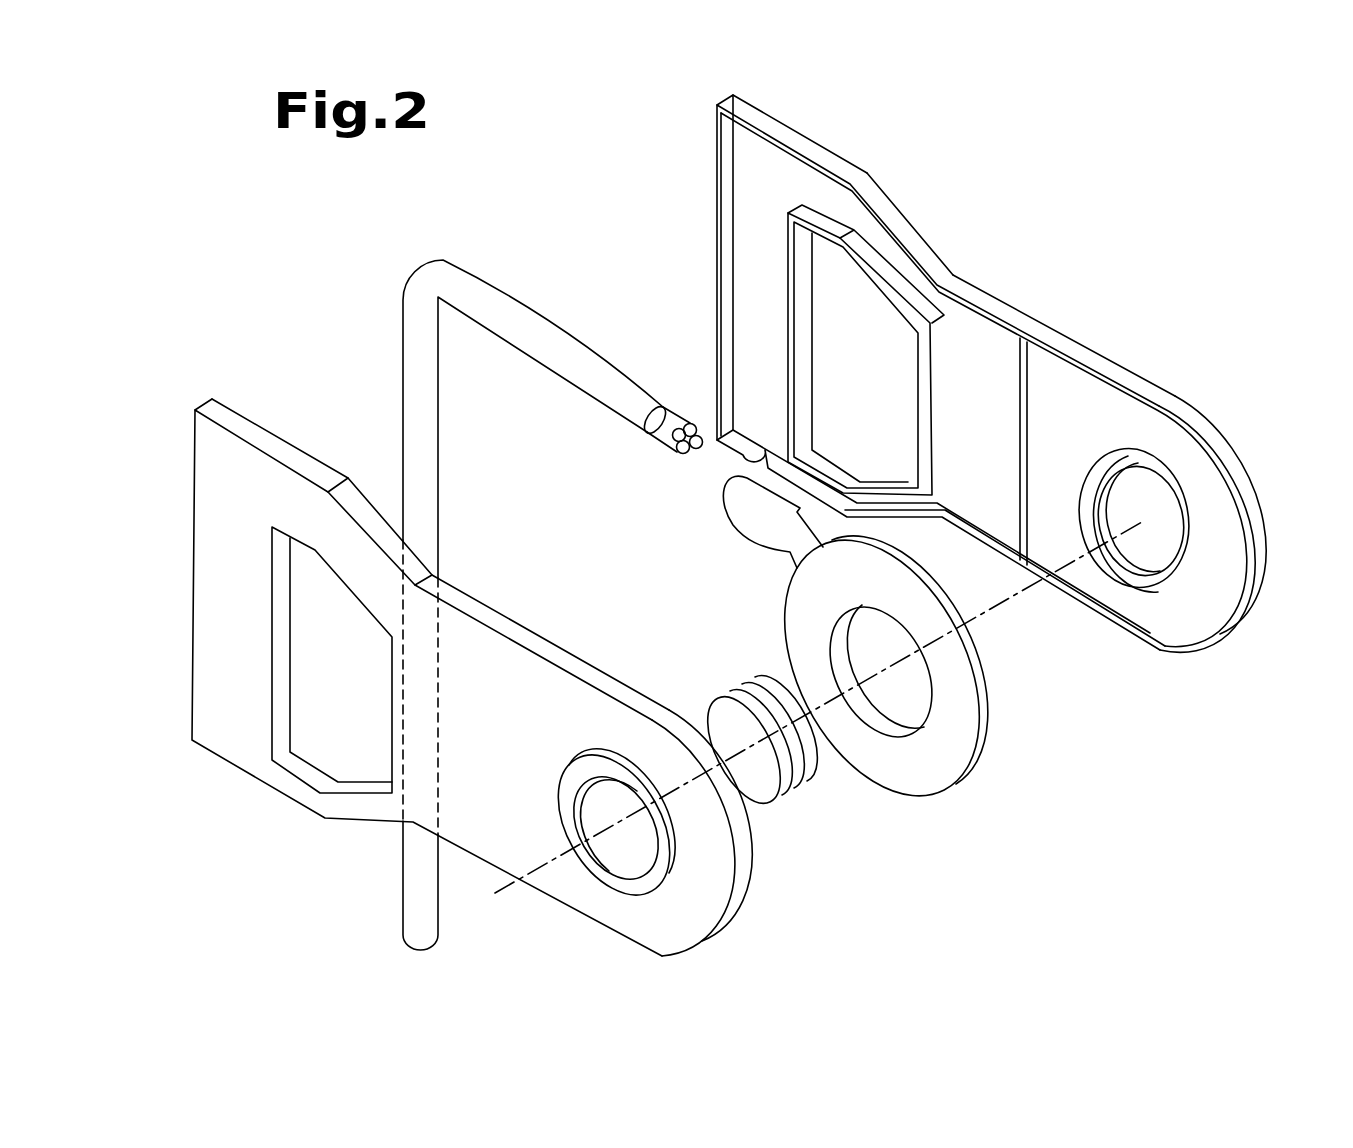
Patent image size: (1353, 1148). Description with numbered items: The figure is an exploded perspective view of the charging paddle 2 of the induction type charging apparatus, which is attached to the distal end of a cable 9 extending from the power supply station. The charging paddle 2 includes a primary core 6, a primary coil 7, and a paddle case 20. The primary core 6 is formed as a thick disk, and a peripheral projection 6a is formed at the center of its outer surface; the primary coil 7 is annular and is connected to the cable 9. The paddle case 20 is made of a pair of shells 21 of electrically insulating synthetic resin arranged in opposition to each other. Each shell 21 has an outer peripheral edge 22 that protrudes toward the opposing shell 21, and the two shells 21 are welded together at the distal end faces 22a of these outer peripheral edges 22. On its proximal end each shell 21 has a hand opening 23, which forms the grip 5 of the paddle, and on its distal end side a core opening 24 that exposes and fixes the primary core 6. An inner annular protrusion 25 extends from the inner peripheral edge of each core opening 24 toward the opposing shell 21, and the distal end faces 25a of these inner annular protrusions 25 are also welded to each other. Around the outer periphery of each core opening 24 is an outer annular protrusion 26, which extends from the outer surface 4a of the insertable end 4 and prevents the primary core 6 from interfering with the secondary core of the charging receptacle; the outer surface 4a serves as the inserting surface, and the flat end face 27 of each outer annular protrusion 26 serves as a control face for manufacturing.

The charging paddle 2 is at (1106, 274).
The insertable end 4 is at (703, 935).
The outer surface 4a is at (670, 873).
The grip 5 is at (205, 515).
The primary core 6 is at (783, 770).
The peripheral projection 6a is at (745, 683).
The primary coil 7 is at (937, 772).
The cable 9 is at (407, 915).
The paddle case 20 is at (277, 472).
The shells 21 is at (467, 635).
The outer peripheral edge 22 is at (540, 642).
The distal end faces 22a is at (610, 672).
The hand opening 23 is at (312, 750).
The core opening 24 is at (610, 862).
The inner annular protrusion 25 is at (1125, 567).
The distal end faces 25a is at (1153, 590).
The outer annular protrusion 26 is at (663, 840).
The end face 27 is at (587, 862).